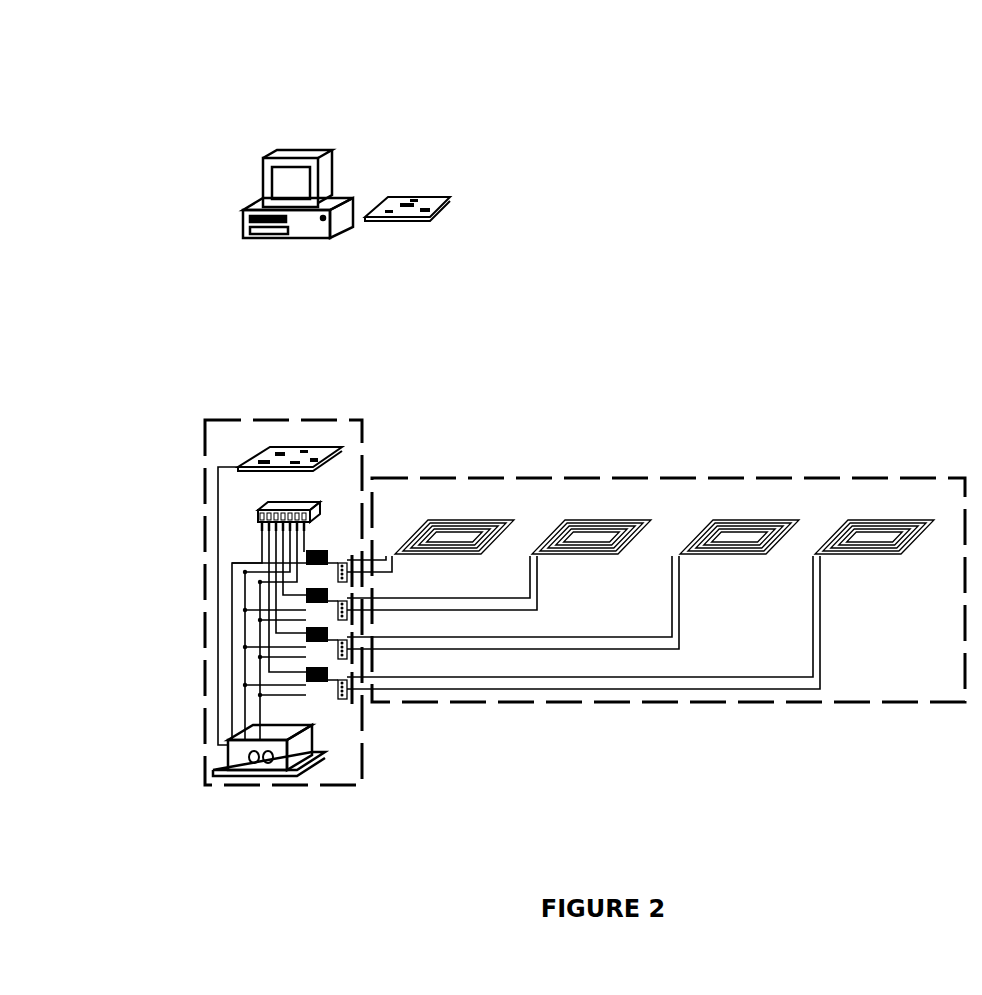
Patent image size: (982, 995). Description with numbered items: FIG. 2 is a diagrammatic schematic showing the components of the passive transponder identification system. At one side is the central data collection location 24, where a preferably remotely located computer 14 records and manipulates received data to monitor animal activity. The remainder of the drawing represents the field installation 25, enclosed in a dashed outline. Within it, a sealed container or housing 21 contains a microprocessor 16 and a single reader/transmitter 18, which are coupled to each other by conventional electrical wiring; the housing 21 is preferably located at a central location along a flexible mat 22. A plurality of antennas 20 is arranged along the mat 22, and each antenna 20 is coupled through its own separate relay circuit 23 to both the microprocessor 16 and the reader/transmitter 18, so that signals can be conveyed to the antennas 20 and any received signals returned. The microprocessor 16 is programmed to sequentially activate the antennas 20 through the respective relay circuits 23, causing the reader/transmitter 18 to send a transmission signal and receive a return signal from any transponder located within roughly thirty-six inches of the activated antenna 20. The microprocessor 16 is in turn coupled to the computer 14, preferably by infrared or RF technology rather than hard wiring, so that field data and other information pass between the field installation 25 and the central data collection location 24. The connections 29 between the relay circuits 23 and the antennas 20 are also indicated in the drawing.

The computer 14 is at (292, 242).
The microprocessor 16 is at (265, 500).
The reader/transmitter 18 is at (213, 747).
The antennas 20 is at (640, 515).
The sealed container or housing 21 is at (207, 588).
The flexible mat 22 is at (885, 702).
The relay circuit 23 is at (338, 637).
The central data collection location 24 is at (380, 138).
The field installation 25 is at (692, 368).
The connectors 29 is at (357, 575).